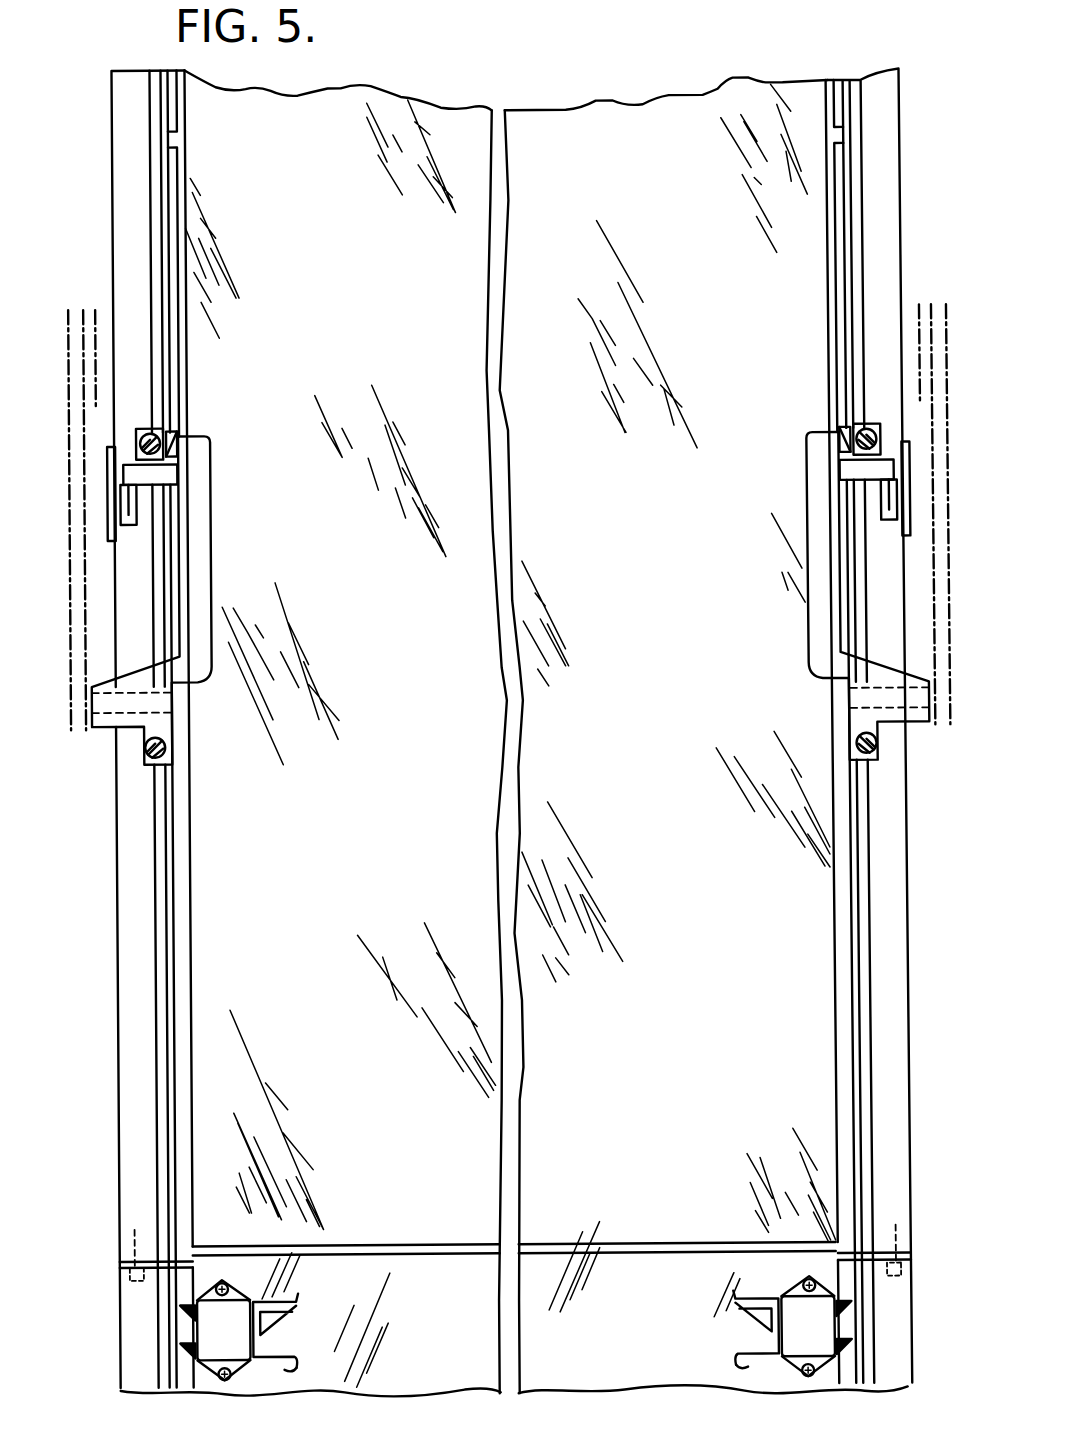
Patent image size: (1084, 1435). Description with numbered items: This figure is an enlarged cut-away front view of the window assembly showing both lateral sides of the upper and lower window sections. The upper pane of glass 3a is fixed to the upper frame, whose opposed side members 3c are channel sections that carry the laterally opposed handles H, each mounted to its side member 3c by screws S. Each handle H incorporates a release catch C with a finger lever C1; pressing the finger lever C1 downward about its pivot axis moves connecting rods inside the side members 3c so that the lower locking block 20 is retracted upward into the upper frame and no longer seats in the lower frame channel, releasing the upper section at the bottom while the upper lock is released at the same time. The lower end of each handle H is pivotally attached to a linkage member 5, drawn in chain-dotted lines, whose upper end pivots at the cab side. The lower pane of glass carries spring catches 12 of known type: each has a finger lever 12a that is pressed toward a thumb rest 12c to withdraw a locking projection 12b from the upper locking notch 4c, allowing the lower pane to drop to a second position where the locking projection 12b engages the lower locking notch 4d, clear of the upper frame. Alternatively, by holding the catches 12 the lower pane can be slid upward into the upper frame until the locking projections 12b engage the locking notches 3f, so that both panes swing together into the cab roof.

The upper pane of glass 3a is at (130, 729).
The side member of frame 3c is at (135, 894).
The locking notch 3f is at (178, 140).
The upper locking notch 4c is at (178, 1292).
The locking notch 4d is at (184, 1350).
The linkage member 5 is at (96, 372).
The spring catch 12 is at (218, 1336).
The finger lever 12a is at (293, 1291).
The locking projection 12b is at (178, 1322).
The thumb rest 12c is at (296, 1360).
The lower locking block 20 is at (131, 1227).
The screw S is at (150, 431).
The release catch C is at (132, 498).
The finger lever C1 is at (174, 440).
The handle H is at (196, 558).